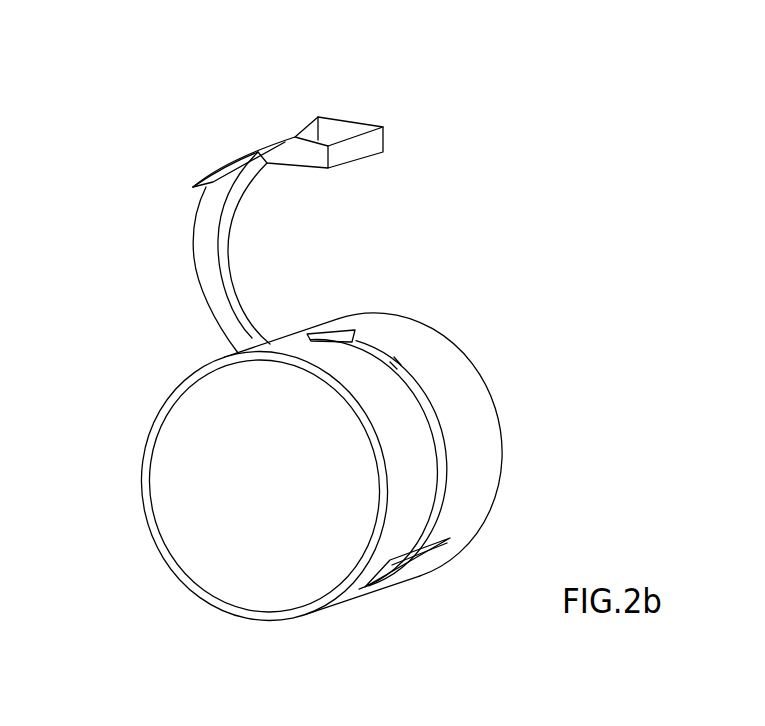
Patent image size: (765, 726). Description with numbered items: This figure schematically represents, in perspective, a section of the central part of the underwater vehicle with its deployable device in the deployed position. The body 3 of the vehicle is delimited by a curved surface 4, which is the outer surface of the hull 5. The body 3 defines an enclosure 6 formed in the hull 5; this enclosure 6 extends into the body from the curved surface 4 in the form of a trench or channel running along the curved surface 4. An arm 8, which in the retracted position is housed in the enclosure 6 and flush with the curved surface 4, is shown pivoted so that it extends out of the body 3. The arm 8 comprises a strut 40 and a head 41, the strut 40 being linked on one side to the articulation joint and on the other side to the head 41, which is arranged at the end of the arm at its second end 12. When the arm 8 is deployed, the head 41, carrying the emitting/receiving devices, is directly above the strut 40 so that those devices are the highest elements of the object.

The body 3 is at (291, 348).
The curved surface 4 is at (310, 478).
The hull 5 is at (148, 435).
The enclosure 6 is at (437, 427).
The arm 8 is at (290, 202).
The second end 12 is at (383, 128).
The strut 40 is at (202, 252).
The head 41 is at (327, 102).